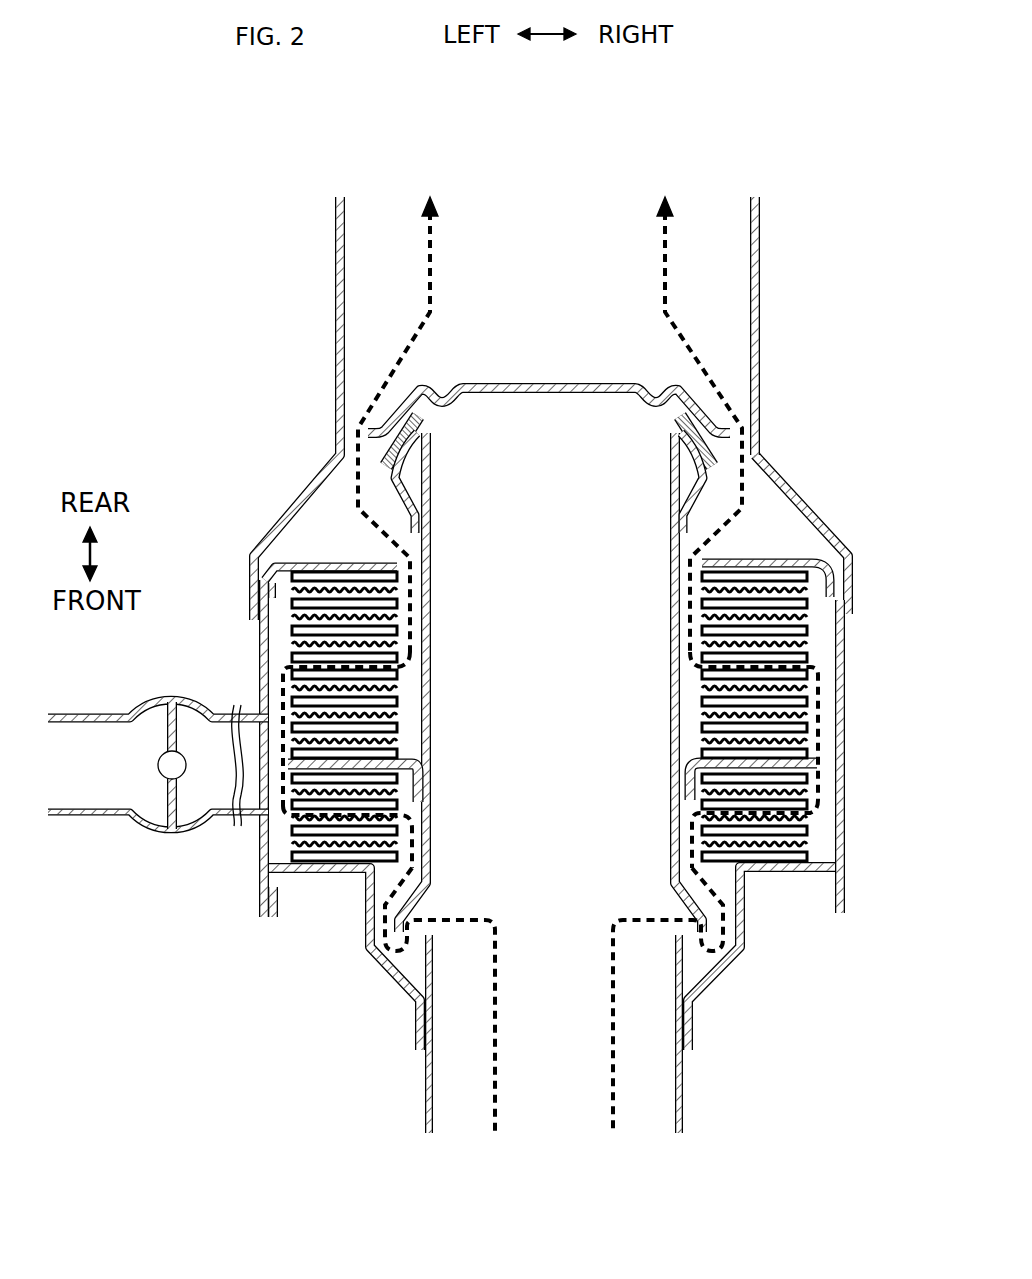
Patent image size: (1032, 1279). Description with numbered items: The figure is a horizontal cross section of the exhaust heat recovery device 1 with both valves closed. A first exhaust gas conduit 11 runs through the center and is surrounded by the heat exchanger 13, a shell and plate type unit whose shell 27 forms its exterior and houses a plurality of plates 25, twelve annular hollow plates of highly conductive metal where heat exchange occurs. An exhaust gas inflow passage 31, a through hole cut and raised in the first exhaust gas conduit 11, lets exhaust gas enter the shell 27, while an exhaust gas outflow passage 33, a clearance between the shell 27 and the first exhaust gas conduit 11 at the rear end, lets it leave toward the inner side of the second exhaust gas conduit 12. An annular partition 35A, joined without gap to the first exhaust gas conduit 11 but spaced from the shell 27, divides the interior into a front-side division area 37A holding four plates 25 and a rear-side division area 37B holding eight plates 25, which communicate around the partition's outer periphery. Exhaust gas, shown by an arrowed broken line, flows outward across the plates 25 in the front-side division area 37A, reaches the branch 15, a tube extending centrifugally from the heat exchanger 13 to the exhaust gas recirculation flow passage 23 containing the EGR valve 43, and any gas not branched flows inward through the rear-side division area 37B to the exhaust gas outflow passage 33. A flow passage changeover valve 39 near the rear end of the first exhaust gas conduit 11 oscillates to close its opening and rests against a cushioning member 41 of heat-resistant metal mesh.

The exhaust heat recovery device 1 is at (255, 430).
The first exhaust gas conduit 11 is at (682, 1108).
The second exhaust gas conduit 12 is at (758, 261).
The heat exchanger 13 is at (848, 624).
The branch 15 is at (238, 714).
The exhaust gas recirculation flow passage 23 is at (72, 714).
The plates 25 is at (800, 847).
The shell 27 is at (845, 697).
The exhaust gas inflow passage 31 is at (415, 918).
The exhaust gas outflow passage 33 is at (358, 428).
The partition 35A is at (700, 760).
The front-side division area 37A is at (690, 810).
The rear-side division area 37B is at (690, 677).
The flow passage changeover valve 39 is at (546, 382).
The cushioning member 41 is at (423, 412).
The EGR valve 43 is at (174, 833).